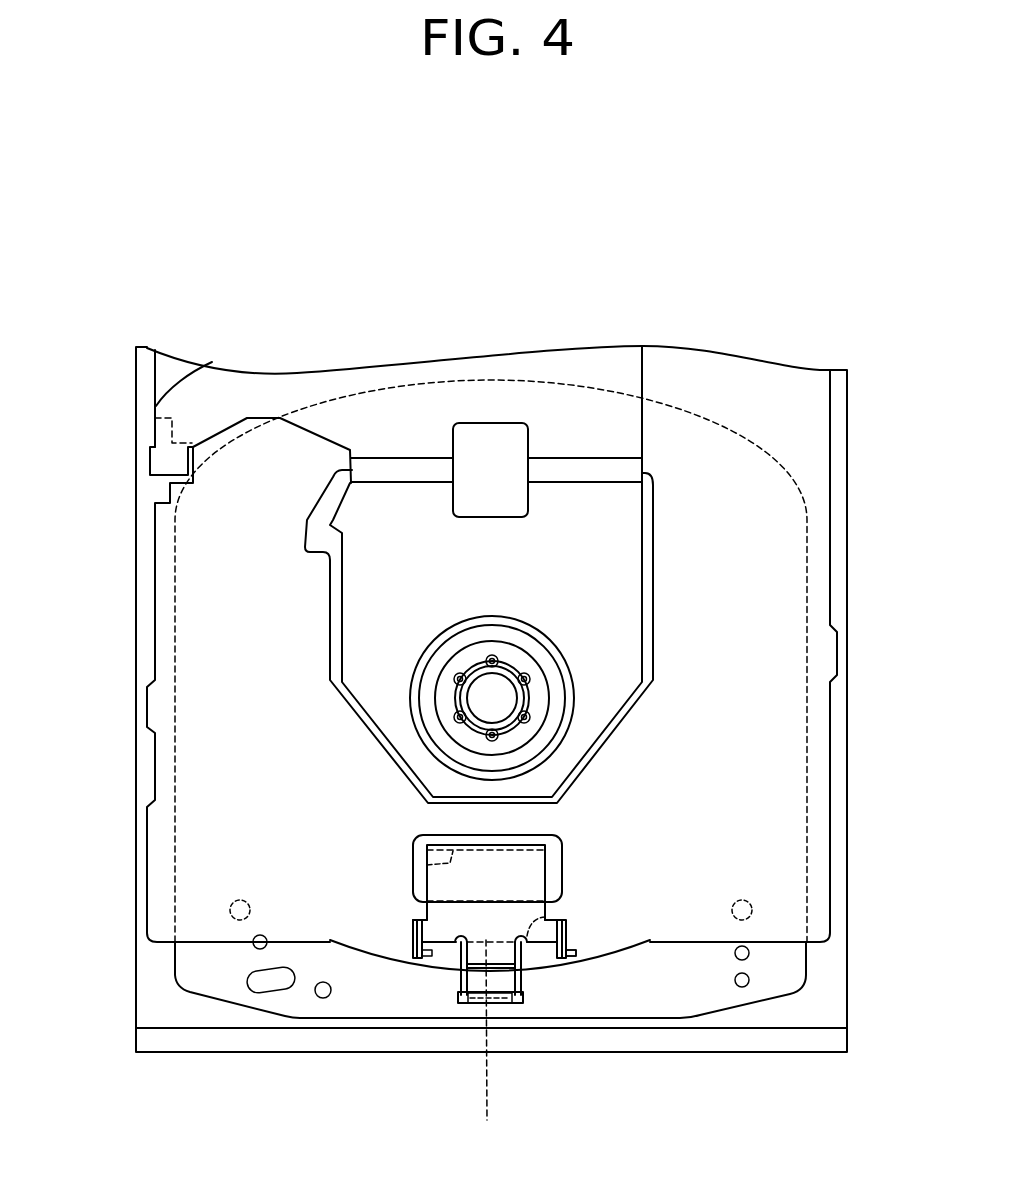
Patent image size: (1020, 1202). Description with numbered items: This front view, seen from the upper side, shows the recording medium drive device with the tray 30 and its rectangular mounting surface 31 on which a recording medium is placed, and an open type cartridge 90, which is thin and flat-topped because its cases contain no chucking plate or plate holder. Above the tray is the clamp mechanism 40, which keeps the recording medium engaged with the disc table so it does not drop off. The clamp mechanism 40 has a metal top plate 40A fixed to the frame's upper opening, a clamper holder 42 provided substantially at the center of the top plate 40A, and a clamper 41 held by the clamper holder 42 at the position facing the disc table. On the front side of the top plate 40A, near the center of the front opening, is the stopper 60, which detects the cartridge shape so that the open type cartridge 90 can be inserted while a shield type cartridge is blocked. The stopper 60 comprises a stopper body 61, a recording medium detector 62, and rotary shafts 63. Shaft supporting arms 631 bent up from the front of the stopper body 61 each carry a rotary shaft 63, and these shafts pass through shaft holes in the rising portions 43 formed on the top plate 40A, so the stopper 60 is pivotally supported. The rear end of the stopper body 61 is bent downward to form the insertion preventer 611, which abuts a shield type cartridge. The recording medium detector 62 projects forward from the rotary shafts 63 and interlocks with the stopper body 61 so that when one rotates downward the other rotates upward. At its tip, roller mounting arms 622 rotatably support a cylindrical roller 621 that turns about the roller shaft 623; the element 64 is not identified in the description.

The tray 30 is at (124, 494).
The mounting surface 31 is at (192, 1020).
The clamp mechanism 40 is at (806, 350).
The top plate 40A is at (488, 1045).
The clamper 41 is at (555, 678).
The clamper holder 42 is at (613, 567).
The rising portions 43 is at (430, 958).
The stopper 60 is at (570, 907).
The stopper body 61 is at (540, 866).
The insertion preventer 611 is at (427, 865).
The recording medium detector 62 is at (451, 963).
The roller 621 is at (498, 1003).
The roller mounting arms 622 is at (520, 976).
The roller shaft 623 is at (465, 1003).
The rotary shafts 63 is at (425, 955).
The shaft supporting arms 631 is at (410, 933).
The stopper tab 64 is at (577, 943).
The open type cartridge 90 is at (806, 982).